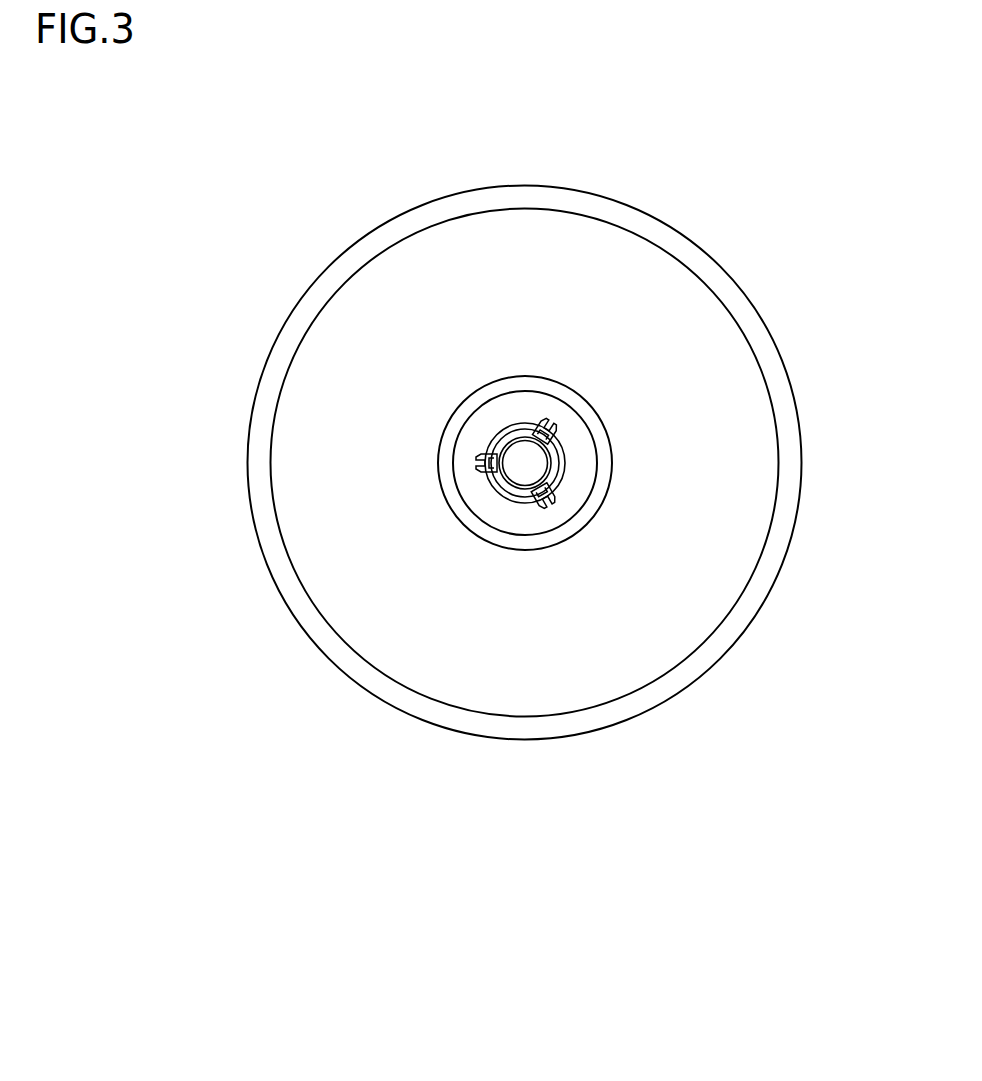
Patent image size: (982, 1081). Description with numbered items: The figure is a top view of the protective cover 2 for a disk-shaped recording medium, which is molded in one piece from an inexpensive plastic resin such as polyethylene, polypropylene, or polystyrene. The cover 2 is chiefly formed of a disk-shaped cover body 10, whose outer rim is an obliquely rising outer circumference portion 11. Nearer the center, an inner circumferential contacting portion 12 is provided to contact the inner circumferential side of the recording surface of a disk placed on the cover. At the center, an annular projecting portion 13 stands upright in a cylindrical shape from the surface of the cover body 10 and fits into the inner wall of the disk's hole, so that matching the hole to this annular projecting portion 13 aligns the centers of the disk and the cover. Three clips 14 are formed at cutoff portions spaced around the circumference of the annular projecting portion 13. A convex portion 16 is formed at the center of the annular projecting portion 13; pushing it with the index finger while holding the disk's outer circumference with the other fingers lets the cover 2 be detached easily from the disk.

The protective cover 2 is at (534, 453).
The cover body 10 is at (728, 418).
The outer circumference portion 11 is at (793, 462).
The inner circumferential contacting portion 12 is at (587, 402).
The annular projecting portion 13 is at (492, 437).
The clips 14 is at (548, 428).
The convex portion 16 is at (518, 470).